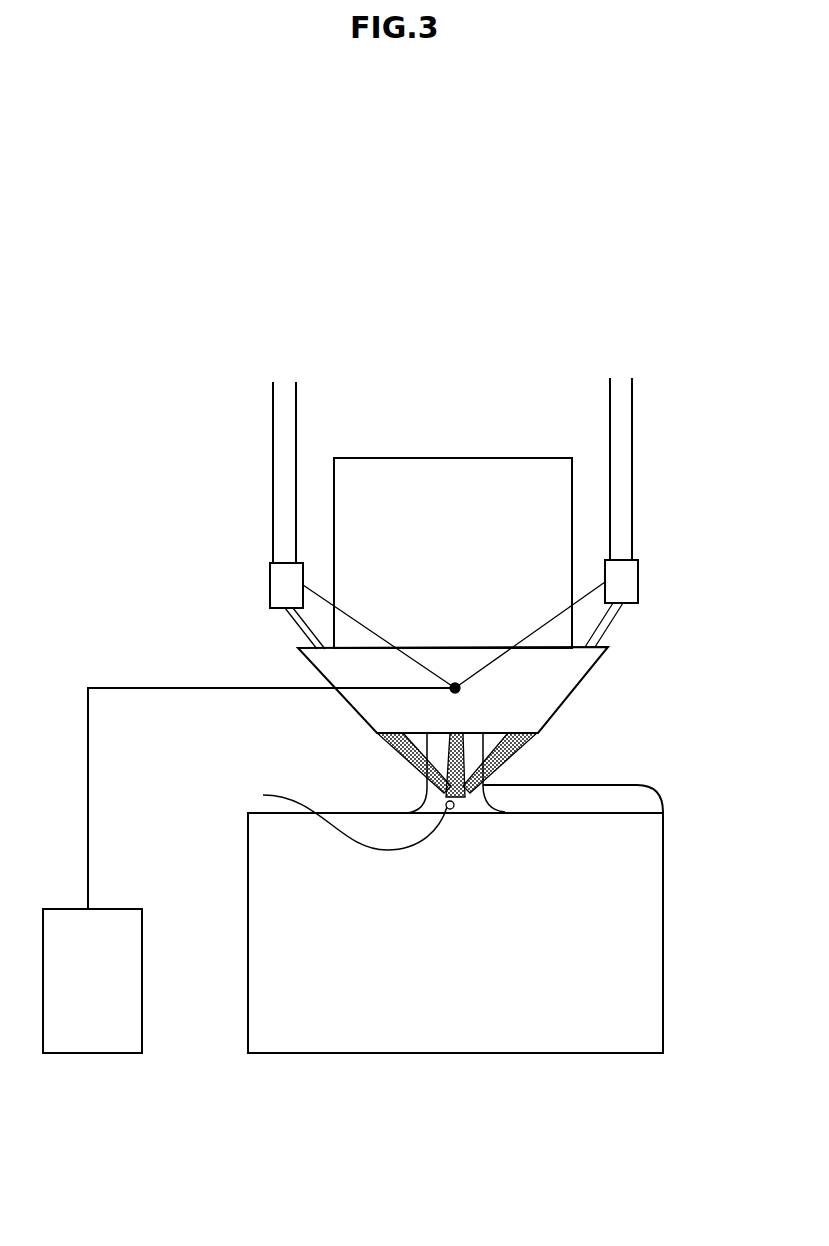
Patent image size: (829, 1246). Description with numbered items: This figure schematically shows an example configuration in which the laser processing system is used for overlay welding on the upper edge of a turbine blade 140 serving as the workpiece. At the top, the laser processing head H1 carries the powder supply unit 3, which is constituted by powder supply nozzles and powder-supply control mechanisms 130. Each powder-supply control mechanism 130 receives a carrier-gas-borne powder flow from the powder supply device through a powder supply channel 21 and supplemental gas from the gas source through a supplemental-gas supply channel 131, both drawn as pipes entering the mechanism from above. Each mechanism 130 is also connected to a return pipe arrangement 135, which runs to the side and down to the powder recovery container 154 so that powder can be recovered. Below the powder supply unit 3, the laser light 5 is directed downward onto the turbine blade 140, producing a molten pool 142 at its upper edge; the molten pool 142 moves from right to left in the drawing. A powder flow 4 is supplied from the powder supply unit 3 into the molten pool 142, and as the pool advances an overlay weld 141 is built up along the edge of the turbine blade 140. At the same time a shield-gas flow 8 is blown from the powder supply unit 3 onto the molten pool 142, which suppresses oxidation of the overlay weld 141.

The processing head H1 is at (497, 350).
The powder supply channel 21 is at (273, 400).
The supplemental-gas supply channel 131 is at (296, 415).
The powder-supply control mechanism 130 is at (270, 590).
The powder supply unit 3 is at (557, 687).
The return pipe arrangement 135 is at (247, 688).
The powder recovery container 154 is at (116, 909).
The turbine blade 140 is at (648, 892).
The overlay weld 141 is at (617, 792).
The molten pool 142 is at (336, 815).
The shield-gas flow 8 is at (423, 793).
The powder flow 4 is at (403, 757).
The laser light 5 is at (467, 757).